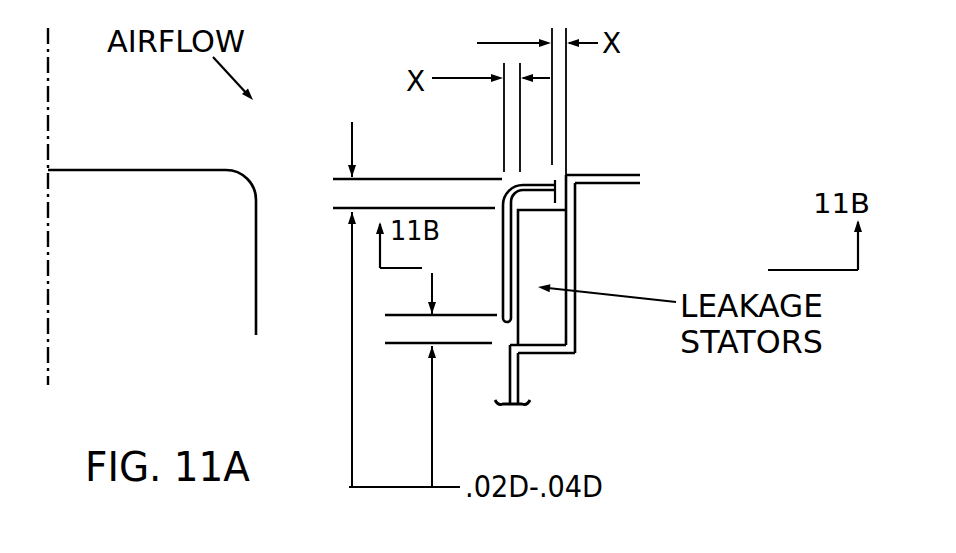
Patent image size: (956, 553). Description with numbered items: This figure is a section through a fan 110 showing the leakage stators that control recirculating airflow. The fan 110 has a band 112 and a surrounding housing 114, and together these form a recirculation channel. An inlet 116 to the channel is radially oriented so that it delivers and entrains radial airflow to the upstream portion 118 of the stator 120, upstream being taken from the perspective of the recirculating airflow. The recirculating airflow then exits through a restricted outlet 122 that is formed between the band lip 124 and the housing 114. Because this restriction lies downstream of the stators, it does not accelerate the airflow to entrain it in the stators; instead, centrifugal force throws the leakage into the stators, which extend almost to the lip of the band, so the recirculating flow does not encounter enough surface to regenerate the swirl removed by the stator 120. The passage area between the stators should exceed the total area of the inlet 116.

The fan 110 is at (152, 206).
The band 112 is at (498, 298).
The housing 114 is at (577, 222).
The inlet 116 is at (507, 327).
The upstream portion of stator 118 is at (542, 323).
The stator 120 is at (538, 263).
The restricted outlet 122 is at (557, 178).
The band lip 124 is at (533, 181).